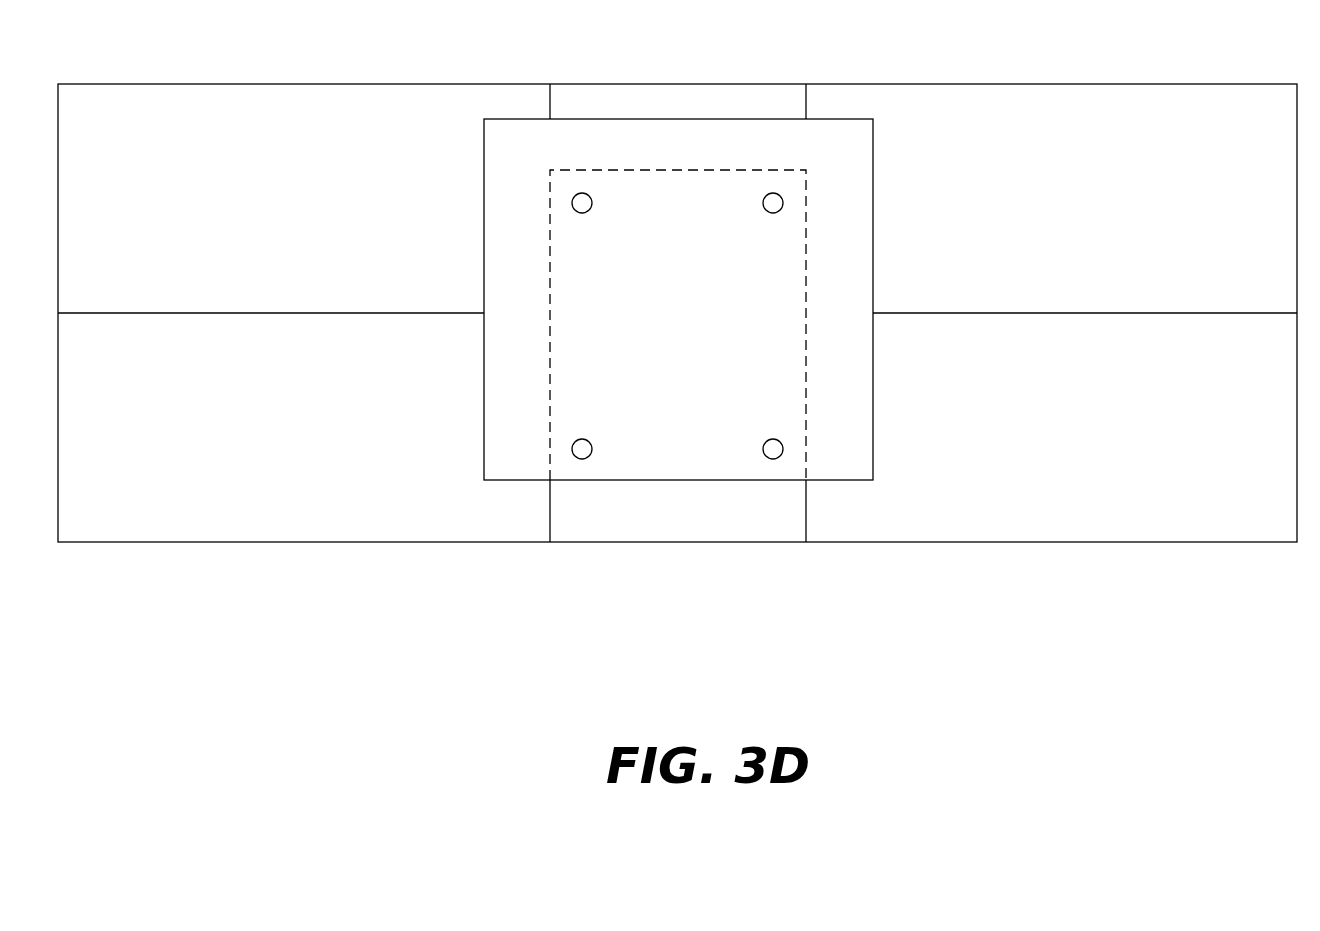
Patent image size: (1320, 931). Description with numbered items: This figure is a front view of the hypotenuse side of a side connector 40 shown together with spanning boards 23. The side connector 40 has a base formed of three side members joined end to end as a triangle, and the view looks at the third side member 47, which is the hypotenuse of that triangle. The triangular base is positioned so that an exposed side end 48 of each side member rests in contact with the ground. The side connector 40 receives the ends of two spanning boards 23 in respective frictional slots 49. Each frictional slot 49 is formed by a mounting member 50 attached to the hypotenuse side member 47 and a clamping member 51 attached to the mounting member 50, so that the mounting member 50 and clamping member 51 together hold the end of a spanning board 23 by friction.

The side connector 40 is at (694, 24).
The spanning boards 23 is at (294, 98).
The third side member 47 is at (727, 103).
The exposed side end 48 is at (659, 542).
The frictional slot 49 is at (853, 222).
The mounting member 50 is at (793, 300).
The clamping member 51 is at (853, 358).